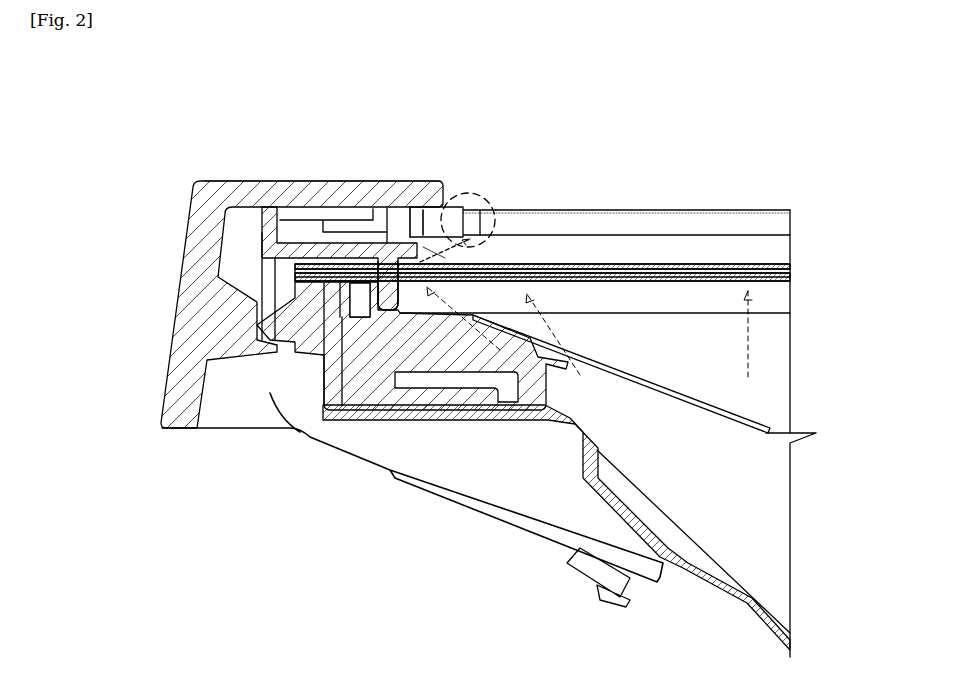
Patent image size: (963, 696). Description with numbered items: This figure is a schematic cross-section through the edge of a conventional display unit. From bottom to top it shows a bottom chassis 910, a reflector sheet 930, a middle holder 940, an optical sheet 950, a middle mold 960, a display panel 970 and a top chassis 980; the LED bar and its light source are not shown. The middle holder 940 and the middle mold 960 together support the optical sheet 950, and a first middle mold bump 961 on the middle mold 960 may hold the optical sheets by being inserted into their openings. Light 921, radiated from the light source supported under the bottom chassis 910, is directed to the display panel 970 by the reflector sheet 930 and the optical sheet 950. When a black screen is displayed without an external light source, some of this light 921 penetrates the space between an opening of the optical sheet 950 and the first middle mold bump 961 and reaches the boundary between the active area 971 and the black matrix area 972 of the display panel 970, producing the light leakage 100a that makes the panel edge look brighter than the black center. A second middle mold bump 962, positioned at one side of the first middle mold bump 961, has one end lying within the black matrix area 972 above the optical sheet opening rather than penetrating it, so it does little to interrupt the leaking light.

The light leakage 100a is at (490, 202).
The bottom chassis 910 is at (677, 588).
The light 921 is at (752, 336).
The reflector sheet 930 is at (753, 417).
The middle holder 940 is at (343, 390).
The optical sheet 950 is at (797, 258).
The middle mold 960 is at (267, 233).
The first middle mold bump 961 is at (397, 293).
The second middle mold bump 962 is at (383, 237).
The display panel 970 is at (668, 195).
The active area 971 is at (600, 210).
The black matrix area 972 is at (458, 204).
The top chassis 980 is at (177, 343).